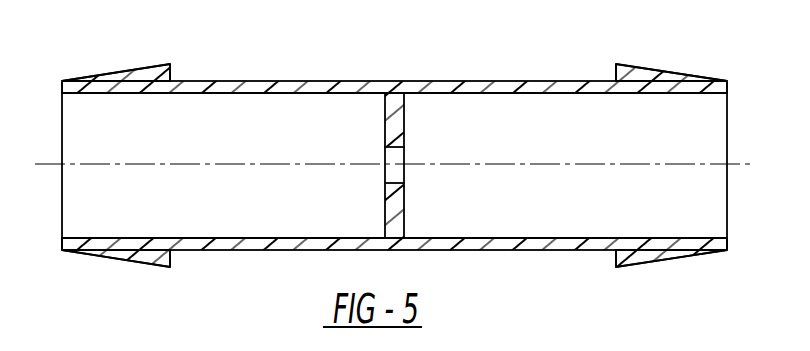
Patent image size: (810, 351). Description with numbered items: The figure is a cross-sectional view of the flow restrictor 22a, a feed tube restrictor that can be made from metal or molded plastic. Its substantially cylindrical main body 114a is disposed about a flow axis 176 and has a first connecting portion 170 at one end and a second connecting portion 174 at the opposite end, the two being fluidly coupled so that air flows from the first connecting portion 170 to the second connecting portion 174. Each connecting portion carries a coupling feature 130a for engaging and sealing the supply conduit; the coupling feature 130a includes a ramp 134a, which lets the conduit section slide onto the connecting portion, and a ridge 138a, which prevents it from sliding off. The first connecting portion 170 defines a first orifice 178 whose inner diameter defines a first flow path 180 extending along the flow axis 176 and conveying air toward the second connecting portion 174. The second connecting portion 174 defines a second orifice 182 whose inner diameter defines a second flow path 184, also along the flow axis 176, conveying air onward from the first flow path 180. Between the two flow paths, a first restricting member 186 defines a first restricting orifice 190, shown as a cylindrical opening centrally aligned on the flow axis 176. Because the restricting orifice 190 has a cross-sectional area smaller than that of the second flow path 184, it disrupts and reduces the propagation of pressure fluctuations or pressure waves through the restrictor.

The flow restrictor 22a is at (235, 49).
The main body 114a is at (323, 80).
The coupling feature 130a is at (70, 252).
The ramp 134a is at (123, 263).
The ridge 138a is at (173, 256).
The first connecting portion 170 is at (727, 150).
The second connecting portion 174 is at (62, 127).
The flow axis 176 is at (162, 164).
The first orifice 178 is at (693, 238).
The first flow path 180 is at (567, 198).
The second orifice 182 is at (62, 220).
The second flow path 184 is at (112, 200).
The first restricting member 186 is at (404, 118).
The first restricting orifice 190 is at (404, 177).